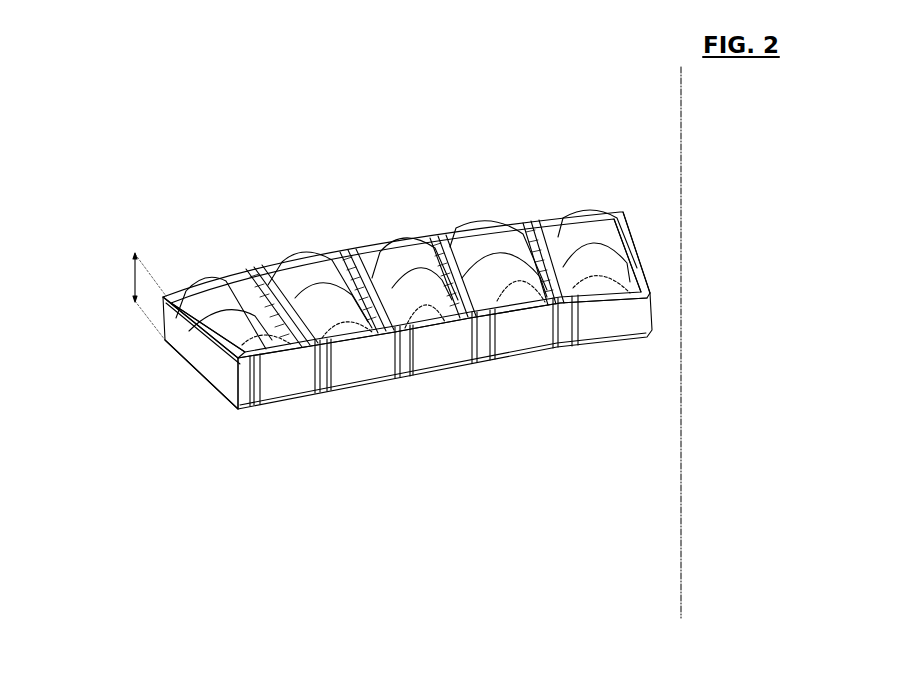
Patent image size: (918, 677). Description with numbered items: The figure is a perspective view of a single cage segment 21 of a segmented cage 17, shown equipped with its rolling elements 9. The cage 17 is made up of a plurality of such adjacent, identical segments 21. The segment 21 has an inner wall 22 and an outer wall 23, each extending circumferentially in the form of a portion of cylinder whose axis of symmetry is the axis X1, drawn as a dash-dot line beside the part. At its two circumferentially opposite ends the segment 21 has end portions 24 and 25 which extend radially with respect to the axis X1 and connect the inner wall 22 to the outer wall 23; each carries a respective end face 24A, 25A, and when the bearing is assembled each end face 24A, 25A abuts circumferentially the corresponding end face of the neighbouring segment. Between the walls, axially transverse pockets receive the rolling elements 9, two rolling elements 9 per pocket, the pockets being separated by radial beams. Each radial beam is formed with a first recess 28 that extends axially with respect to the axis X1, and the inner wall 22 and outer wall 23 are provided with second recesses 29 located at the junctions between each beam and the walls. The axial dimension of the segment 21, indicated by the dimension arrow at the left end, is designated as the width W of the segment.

The cage 17 is at (183, 130).
The cage segment 21 is at (430, 232).
The outer wall 23 is at (332, 250).
The first recess 28 is at (257, 268).
The rolling element 9 is at (268, 329).
The end portion 25 is at (623, 210).
The end face 25A is at (643, 257).
The end portion 24 is at (222, 325).
The end face 24A is at (220, 368).
The inner wall 22 is at (338, 333).
The second recess 29 is at (327, 393).
The width W is at (135, 296).
The axis X1 is at (696, 342).